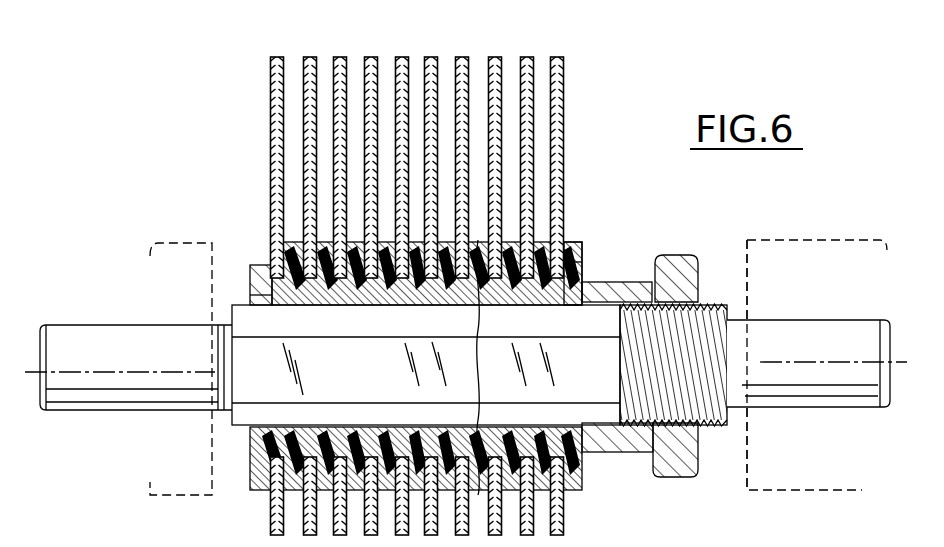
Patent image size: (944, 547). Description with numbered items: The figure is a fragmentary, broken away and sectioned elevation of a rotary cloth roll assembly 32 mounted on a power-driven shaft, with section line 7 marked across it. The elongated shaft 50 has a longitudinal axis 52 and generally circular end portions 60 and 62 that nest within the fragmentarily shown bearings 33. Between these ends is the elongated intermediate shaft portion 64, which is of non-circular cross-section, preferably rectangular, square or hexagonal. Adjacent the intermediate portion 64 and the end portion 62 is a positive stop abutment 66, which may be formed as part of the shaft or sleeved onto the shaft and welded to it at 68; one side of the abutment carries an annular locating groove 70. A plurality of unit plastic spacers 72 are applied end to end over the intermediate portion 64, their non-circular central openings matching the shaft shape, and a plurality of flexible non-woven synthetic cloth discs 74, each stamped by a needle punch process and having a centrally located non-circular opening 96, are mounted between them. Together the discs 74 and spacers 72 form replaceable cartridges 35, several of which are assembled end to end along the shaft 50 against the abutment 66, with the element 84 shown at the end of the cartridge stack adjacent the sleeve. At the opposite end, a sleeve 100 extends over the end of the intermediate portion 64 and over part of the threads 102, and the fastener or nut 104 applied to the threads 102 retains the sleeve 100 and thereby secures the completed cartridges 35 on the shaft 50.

The rotary cloth roll assembly 32 is at (613, 67).
The bearings 33 is at (185, 242).
The replaceable cartridges 35 is at (391, 270).
The flexible cloth disc 74 is at (271, 72).
The section line 7- 7 is at (271, 203).
The shaft end portion 62 is at (128, 349).
The elongated shaft 50 is at (232, 426).
The spacer 72 is at (325, 292).
The annular locating groove 70 is at (253, 456).
The positive stop abutment 66 is at (256, 268).
The weld 68 is at (250, 303).
The end collar 84 is at (583, 243).
The non-circular opening 96 is at (586, 262).
The sleeve 100 is at (612, 283).
The threads 102 is at (713, 300).
The intermediate shaft portion 64 is at (591, 432).
The fastener 104 is at (690, 479).
The shaft end portion 60 is at (787, 326).
The longitudinal axis 52 is at (851, 362).